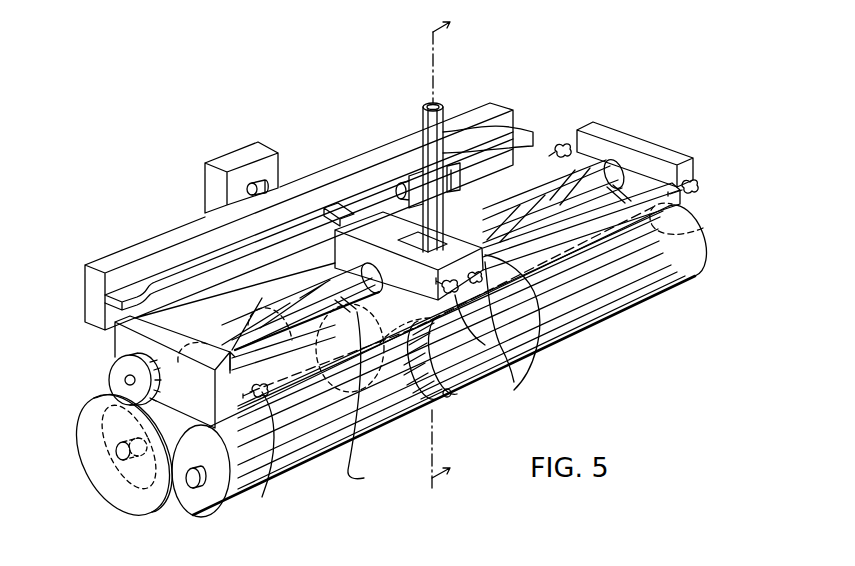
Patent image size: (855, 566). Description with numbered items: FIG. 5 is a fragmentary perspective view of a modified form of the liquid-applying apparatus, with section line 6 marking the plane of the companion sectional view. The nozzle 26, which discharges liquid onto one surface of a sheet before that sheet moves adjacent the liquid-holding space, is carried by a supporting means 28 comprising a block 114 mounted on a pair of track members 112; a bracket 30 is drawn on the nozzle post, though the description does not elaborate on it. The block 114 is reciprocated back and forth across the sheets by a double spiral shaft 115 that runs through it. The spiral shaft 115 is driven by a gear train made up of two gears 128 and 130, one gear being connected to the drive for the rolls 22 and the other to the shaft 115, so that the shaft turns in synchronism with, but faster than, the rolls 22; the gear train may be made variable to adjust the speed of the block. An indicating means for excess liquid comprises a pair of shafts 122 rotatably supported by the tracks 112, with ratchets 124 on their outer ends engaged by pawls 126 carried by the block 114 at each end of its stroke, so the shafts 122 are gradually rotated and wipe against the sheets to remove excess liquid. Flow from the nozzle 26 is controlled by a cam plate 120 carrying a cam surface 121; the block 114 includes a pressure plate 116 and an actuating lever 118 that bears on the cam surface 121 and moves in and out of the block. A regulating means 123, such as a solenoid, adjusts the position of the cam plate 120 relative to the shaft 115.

The section line 6- 6 is at (451, 251).
The rolls 22 is at (452, 397).
The nozzle 26 is at (424, 118).
The means for supporting the nozzle 28 is at (398, 242).
The bracket 30 is at (458, 187).
The track members 112 is at (592, 236).
The block 114 is at (522, 325).
The double spiral shaft 115 is at (627, 166).
The pressure plate 116 is at (385, 225).
The actuating lever 118 is at (336, 222).
The cam plate 120 is at (137, 246).
The cam surface 121 is at (213, 257).
The shafts 122 is at (625, 192).
The means for adjusting the position of the cam plate 123 is at (241, 155).
The ratchets 124 is at (560, 150).
The pawls 126 is at (514, 382).
The gear 128 is at (120, 375).
The gear 130 is at (90, 437).